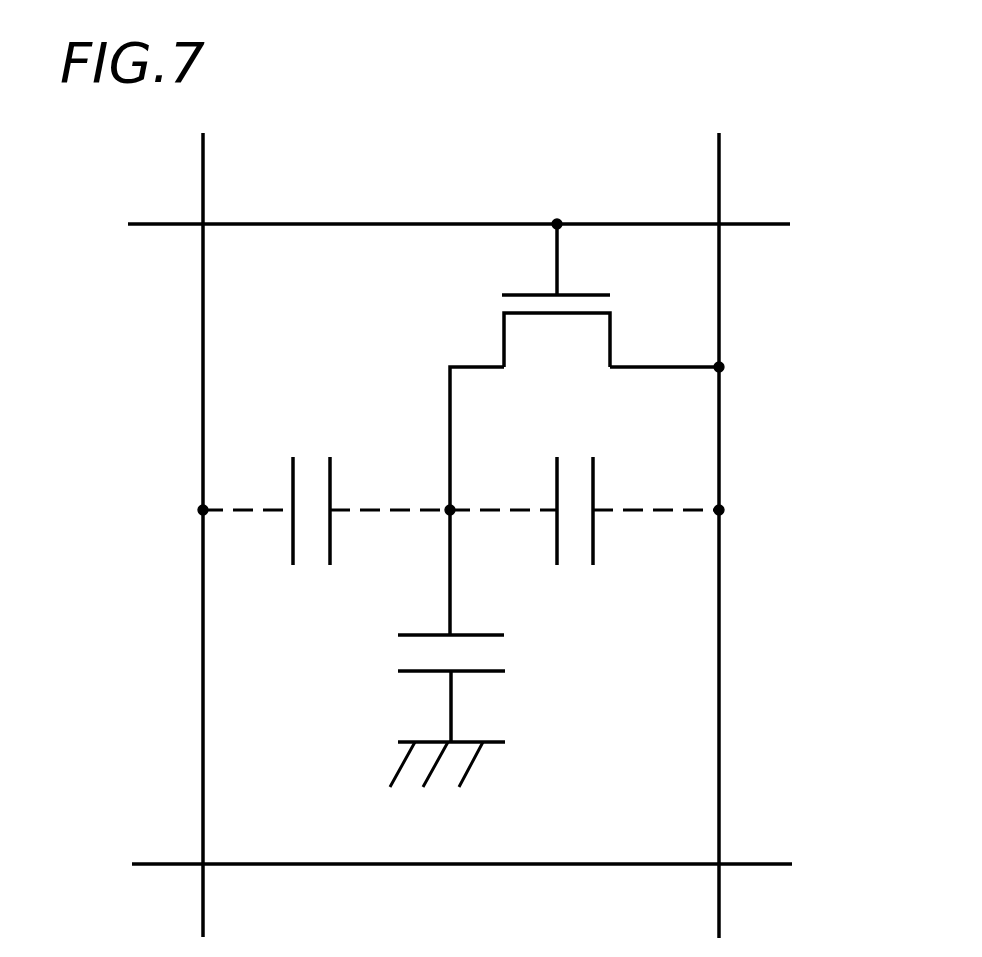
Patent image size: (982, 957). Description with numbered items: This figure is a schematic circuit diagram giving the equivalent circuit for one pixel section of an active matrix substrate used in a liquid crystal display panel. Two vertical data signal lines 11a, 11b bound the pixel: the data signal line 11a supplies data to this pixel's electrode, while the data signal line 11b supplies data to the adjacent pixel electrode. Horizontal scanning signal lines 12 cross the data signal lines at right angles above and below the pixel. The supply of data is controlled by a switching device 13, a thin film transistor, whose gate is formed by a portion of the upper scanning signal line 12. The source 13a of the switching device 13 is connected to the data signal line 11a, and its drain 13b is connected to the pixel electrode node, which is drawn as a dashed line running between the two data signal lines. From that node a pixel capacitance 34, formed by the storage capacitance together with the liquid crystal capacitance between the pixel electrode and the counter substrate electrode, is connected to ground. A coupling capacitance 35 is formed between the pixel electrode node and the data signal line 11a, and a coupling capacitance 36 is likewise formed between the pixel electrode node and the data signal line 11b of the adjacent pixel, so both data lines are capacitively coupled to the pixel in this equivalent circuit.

The data signal line 11a is at (719, 180).
The data signal line 11b is at (203, 174).
The scanning signal line 12 is at (406, 224).
The switching device 13 is at (490, 300).
The source 13a is at (673, 368).
The drain 13b is at (486, 368).
The pixel capacitance 34 is at (502, 655).
The coupling capacitance 35 is at (570, 465).
The coupling capacitance 36 is at (310, 460).